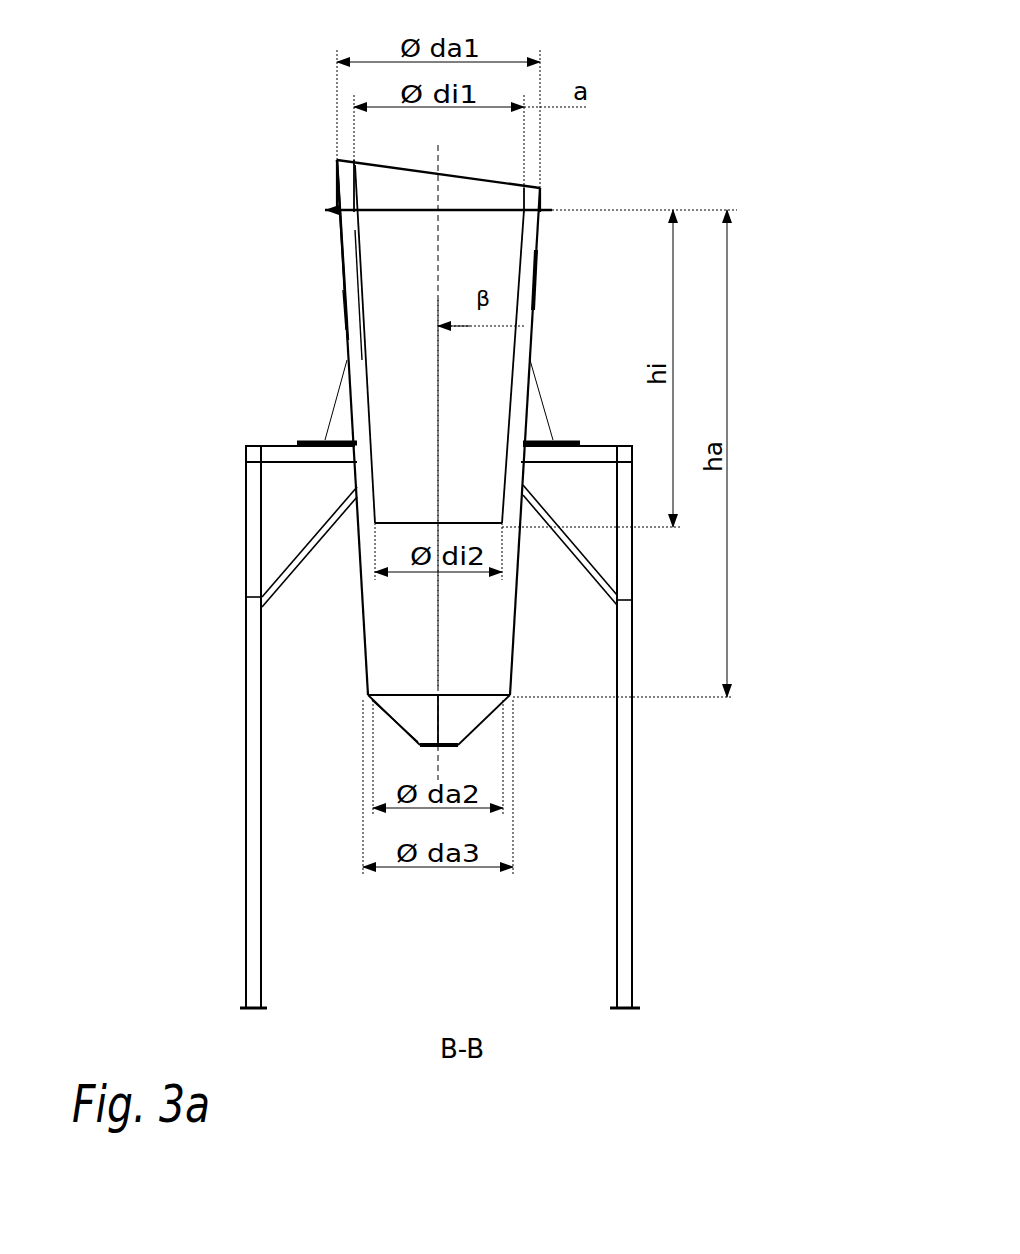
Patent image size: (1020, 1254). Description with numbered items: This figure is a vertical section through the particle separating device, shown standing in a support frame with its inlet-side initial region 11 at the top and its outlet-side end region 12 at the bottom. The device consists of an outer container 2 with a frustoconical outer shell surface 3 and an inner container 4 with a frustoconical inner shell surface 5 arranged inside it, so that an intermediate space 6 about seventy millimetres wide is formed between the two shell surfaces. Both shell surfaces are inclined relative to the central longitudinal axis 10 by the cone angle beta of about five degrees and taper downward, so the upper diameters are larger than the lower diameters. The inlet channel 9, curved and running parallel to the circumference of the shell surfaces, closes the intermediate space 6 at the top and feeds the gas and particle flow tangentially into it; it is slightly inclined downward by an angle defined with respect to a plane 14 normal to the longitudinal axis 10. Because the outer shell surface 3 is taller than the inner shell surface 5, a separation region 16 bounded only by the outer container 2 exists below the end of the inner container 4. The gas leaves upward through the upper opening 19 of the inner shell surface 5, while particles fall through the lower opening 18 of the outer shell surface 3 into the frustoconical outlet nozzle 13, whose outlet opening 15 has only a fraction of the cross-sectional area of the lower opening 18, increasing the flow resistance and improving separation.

The outer container 2 is at (343, 288).
The outer shell surface 3 is at (345, 330).
The inner container 4 is at (347, 250).
The inner shell surface 5 is at (364, 308).
The intermediate space 6 is at (345, 310).
The inlet channel 9 is at (337, 167).
The central longitudinal axis 10 is at (437, 598).
The inlet-side initial region 11 is at (627, 154).
The outlet-side end region 12 is at (580, 718).
The outlet nozzle 13 is at (413, 707).
The plane 14 is at (605, 208).
The outlet opening 15 is at (446, 757).
The separation region 16 is at (479, 632).
The lower opening 18 is at (462, 707).
The upper opening 19 is at (462, 203).